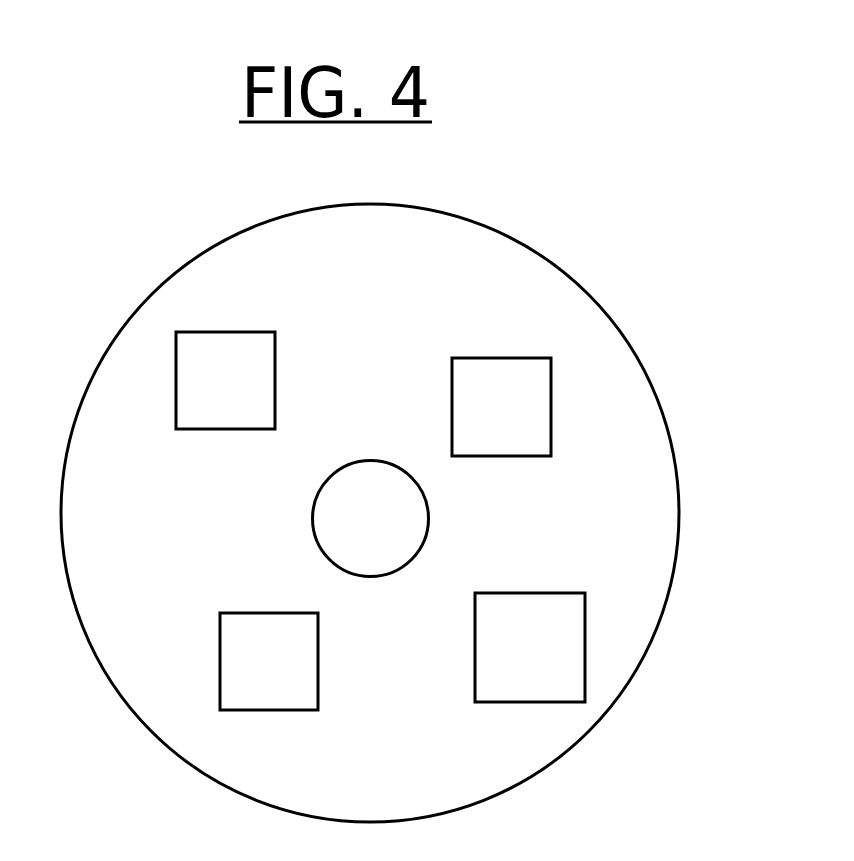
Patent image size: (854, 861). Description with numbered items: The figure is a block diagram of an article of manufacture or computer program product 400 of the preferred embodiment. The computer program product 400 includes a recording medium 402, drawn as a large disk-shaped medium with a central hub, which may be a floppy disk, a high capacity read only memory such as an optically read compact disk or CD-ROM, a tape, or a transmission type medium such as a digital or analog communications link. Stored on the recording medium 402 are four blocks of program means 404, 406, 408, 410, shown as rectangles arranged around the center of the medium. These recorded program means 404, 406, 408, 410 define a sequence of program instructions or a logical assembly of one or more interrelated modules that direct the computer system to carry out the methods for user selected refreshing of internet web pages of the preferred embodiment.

The computer program product 400 is at (644, 302).
The recording medium 402 is at (105, 325).
The program means 404 is at (501, 407).
The program means 406 is at (530, 647).
The program means 408 is at (269, 661).
The program means 410 is at (225, 380).